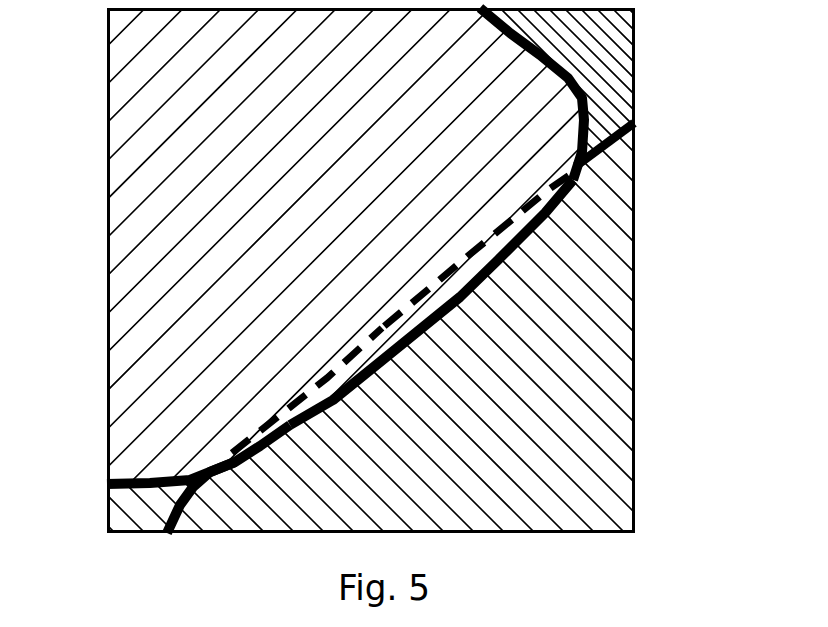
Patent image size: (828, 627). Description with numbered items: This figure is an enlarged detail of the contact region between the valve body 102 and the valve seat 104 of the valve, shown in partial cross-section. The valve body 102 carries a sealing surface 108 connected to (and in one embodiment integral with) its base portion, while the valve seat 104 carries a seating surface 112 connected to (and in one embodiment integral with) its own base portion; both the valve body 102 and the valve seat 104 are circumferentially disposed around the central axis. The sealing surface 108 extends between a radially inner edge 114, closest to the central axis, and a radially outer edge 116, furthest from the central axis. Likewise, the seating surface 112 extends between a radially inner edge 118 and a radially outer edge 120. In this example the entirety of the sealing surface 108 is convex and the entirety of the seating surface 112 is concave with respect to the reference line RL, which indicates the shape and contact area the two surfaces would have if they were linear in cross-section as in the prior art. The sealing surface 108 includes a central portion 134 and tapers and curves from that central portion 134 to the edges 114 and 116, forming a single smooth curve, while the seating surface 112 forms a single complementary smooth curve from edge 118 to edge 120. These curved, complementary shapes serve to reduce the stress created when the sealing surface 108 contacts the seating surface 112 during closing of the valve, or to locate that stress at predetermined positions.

The valve body 102 is at (581, 90).
The valve seat 104 is at (170, 510).
The sealing surface 108 is at (469, 281).
The seating surface 112 is at (494, 274).
The radially inner edge 114 is at (197, 480).
The radially outer edge 116 is at (580, 160).
The radially inner edge 118 is at (205, 487).
The radially outer edge 120 is at (593, 168).
The central portion 134 is at (418, 317).
The reference line RL is at (323, 373).